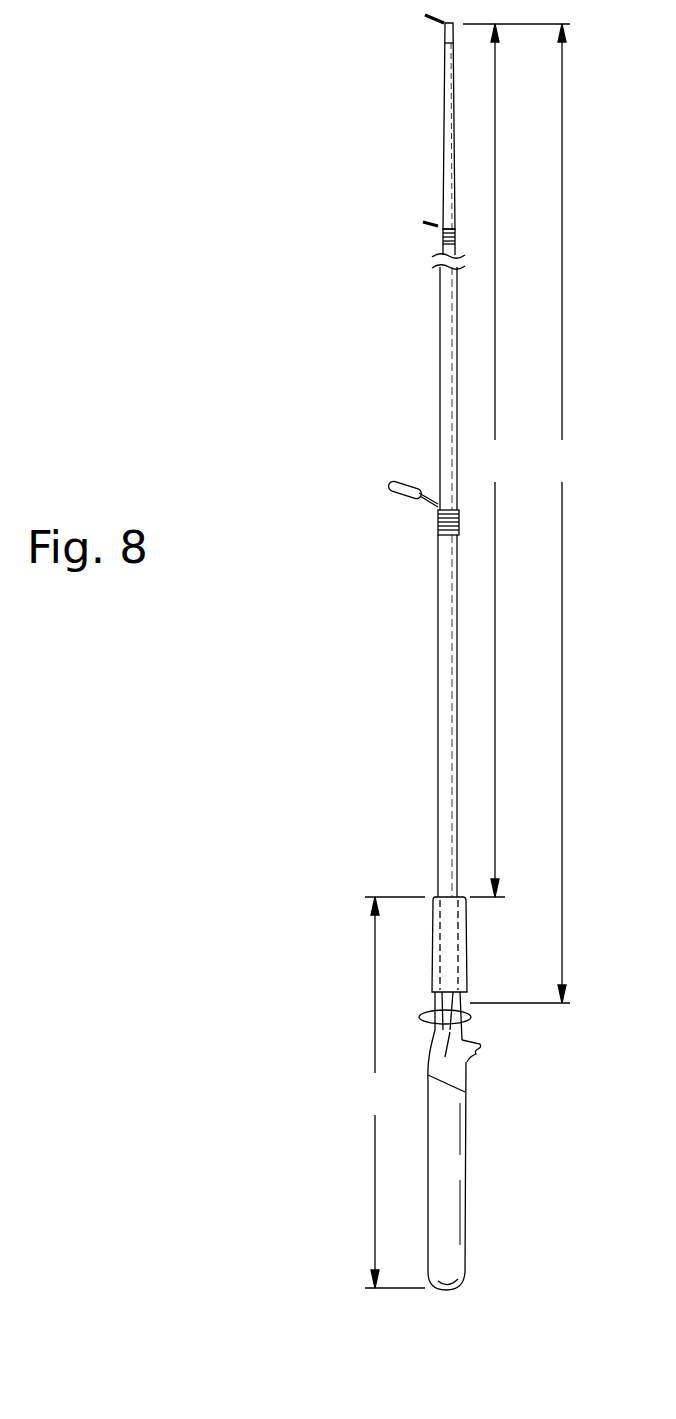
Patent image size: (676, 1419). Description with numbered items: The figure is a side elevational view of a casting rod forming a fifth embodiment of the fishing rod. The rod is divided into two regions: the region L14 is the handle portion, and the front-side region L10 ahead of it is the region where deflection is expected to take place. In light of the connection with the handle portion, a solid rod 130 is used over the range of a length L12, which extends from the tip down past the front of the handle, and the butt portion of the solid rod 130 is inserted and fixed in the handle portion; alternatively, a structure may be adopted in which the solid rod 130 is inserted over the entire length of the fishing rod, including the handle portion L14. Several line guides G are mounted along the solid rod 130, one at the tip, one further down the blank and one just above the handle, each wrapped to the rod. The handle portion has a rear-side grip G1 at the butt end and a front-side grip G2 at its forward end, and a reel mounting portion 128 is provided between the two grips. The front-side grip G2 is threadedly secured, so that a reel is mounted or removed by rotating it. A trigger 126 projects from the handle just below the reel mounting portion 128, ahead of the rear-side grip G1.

The solid rod 130 is at (447, 695).
The line guide G is at (426, 16).
The front-side grip G2 is at (463, 948).
The rear-side grip G1 is at (443, 1205).
The reel mounting portion 128 is at (470, 1019).
The trigger 126 is at (478, 1057).
The front-side region L10 is at (492, 460).
The length of solid rod range L12 is at (526, 513).
The handle portion region L14 is at (391, 1092).